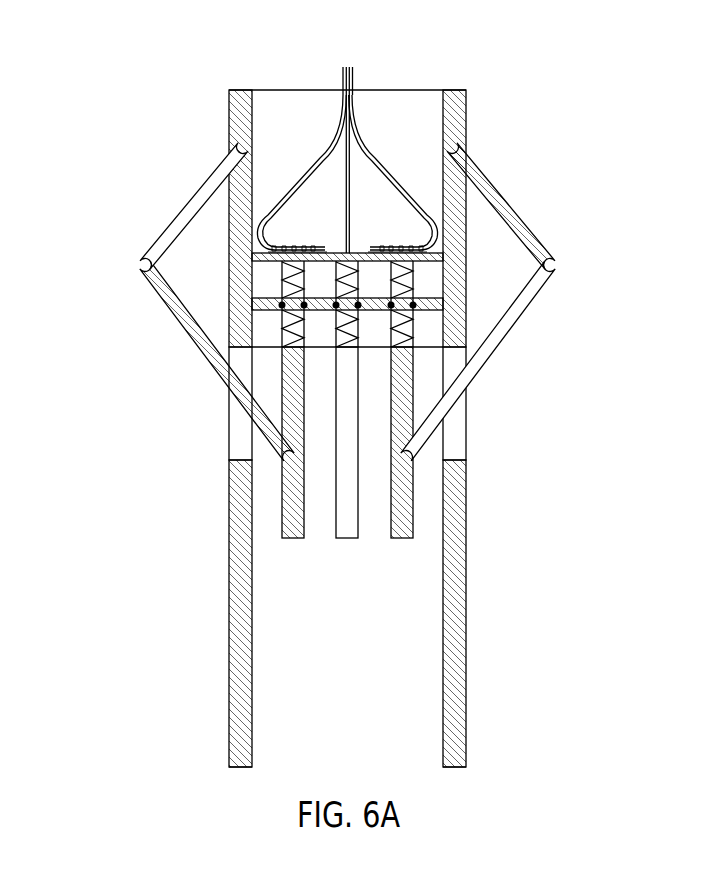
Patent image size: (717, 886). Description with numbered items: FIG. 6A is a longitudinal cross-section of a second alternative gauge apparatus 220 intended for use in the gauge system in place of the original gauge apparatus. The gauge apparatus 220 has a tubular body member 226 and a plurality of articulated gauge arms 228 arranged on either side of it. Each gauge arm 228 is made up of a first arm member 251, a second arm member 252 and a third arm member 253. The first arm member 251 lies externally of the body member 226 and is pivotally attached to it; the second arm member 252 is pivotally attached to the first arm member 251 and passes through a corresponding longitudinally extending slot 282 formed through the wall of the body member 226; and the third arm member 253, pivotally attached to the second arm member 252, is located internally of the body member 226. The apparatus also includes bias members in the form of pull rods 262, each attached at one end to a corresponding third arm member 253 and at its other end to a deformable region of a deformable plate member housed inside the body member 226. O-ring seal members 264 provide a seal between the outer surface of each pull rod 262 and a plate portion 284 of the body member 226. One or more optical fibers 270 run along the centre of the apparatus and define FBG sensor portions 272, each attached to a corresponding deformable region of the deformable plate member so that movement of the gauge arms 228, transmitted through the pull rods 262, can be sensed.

The gauge apparatus 220 is at (178, 738).
The body member 226 is at (229, 648).
The gauge arm 228 is at (354, 302).
The first arm member 251 is at (186, 209).
The second arm member 252 is at (208, 363).
The third arm member 253 is at (294, 540).
The pull rod 262 is at (282, 280).
The O-ring seal member 264 is at (413, 305).
The optical fiber 270 is at (323, 163).
The FBG sensor portion 272 is at (300, 250).
The slot 282 is at (229, 440).
The plate portion 284 is at (262, 305).